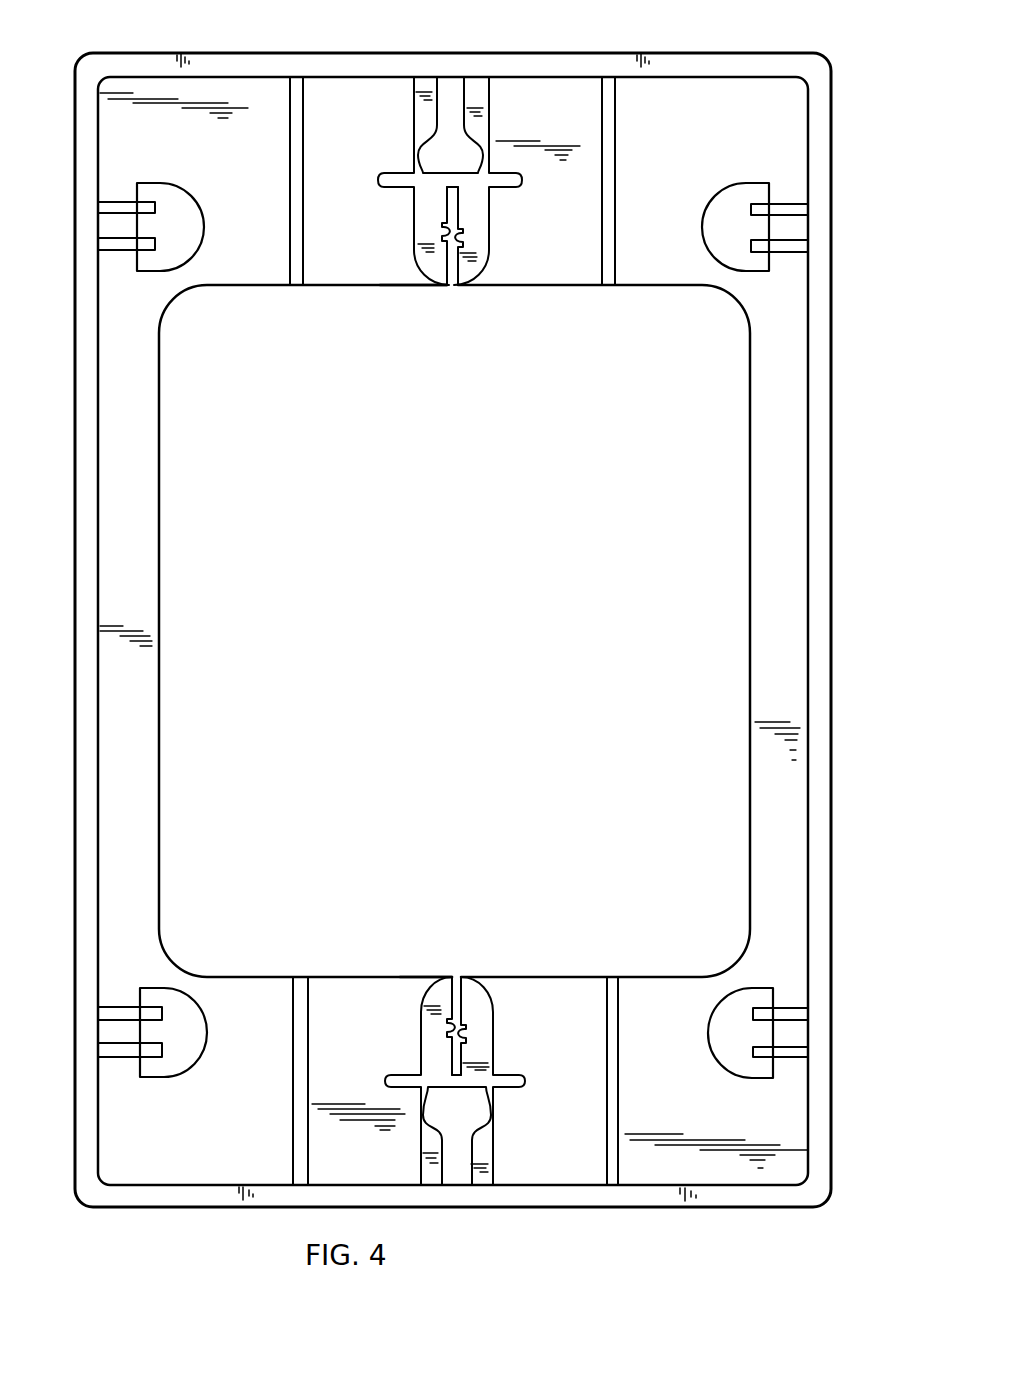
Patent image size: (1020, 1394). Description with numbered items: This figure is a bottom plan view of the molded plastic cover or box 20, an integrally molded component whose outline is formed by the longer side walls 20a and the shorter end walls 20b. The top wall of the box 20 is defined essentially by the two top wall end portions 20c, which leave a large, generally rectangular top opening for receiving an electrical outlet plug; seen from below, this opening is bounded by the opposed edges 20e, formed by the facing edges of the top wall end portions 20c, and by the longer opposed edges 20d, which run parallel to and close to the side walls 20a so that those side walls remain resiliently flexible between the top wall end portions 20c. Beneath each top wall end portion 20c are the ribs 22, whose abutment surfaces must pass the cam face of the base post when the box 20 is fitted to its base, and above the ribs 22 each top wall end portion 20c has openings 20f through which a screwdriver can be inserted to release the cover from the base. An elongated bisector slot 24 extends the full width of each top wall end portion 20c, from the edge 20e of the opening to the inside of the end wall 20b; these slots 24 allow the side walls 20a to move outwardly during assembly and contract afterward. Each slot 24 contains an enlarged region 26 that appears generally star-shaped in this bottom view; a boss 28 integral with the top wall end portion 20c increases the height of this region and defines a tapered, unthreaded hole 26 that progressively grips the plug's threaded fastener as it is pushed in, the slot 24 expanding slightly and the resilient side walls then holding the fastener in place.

The molded plastic cover or box 20 is at (691, 42).
The side walls 20a is at (76, 473).
The end walls 20b is at (559, 52).
The top wall end portions 20c is at (268, 96).
The longer opposed edges 20d is at (161, 488).
The opposed edges 20e is at (396, 288).
The openings 20f is at (178, 190).
The ribs 22 is at (174, 230).
The bisector slot 24 is at (458, 280).
The enlarged region or fastener hole 26 is at (444, 228).
The boss 28 is at (482, 222).